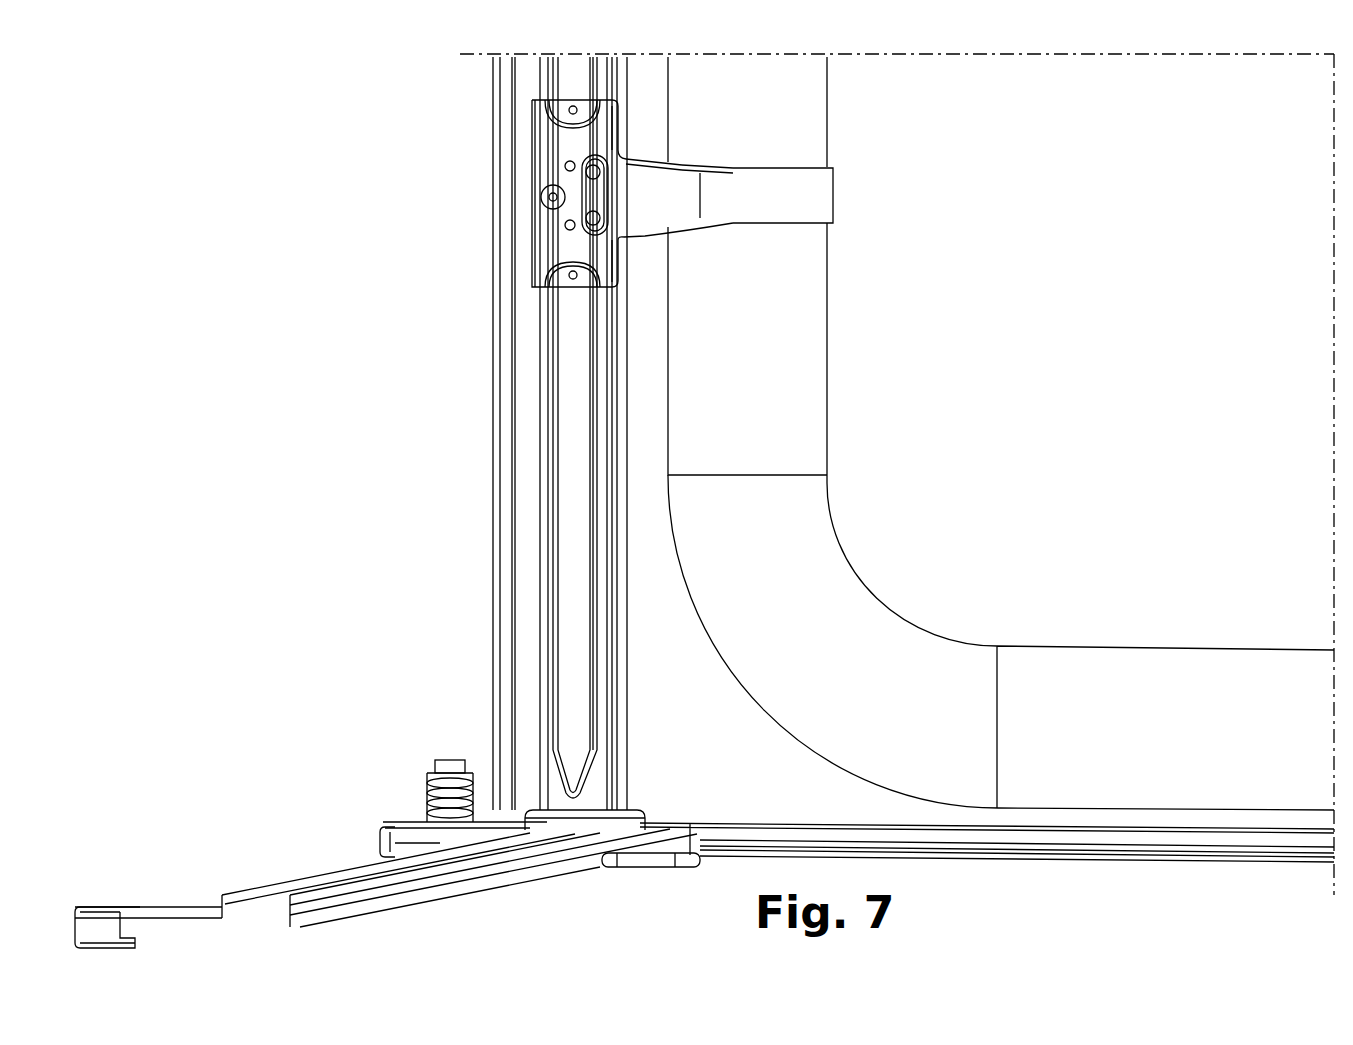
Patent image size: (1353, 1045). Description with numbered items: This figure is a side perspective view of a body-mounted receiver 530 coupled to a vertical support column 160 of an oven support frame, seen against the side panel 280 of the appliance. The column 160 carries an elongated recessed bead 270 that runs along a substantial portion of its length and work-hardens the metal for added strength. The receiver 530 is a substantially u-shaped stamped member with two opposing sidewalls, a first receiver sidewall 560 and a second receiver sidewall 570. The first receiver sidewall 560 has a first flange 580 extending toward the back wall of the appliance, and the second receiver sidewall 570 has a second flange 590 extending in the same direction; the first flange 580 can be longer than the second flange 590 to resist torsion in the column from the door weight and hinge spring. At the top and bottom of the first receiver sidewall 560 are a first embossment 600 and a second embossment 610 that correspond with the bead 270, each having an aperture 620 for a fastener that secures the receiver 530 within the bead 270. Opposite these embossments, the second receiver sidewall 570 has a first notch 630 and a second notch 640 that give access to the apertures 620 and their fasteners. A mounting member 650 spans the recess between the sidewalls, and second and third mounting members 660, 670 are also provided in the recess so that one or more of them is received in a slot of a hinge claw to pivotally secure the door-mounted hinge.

The vertical support column 160 is at (548, 82).
The bead 270 is at (592, 76).
The side panel 280 is at (1031, 176).
The body-mounted receiver 530 is at (692, 151).
The first receiver sidewall 560 is at (623, 162).
The second receiver sidewall 570 is at (708, 121).
The first flange 580 is at (808, 180).
The second flange 590 is at (708, 206).
The first embossment 600 is at (593, 90).
The second embossment 610 is at (579, 297).
The aperture 620 is at (569, 110).
The first notch 630 is at (621, 135).
The second notch 640 is at (580, 259).
The mounting member 650 is at (541, 197).
The second mounting member 660 is at (587, 168).
The third mounting member 670 is at (588, 221).